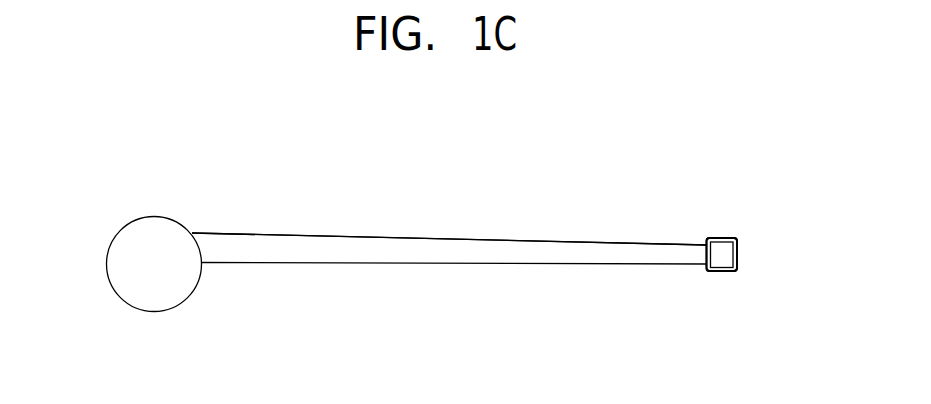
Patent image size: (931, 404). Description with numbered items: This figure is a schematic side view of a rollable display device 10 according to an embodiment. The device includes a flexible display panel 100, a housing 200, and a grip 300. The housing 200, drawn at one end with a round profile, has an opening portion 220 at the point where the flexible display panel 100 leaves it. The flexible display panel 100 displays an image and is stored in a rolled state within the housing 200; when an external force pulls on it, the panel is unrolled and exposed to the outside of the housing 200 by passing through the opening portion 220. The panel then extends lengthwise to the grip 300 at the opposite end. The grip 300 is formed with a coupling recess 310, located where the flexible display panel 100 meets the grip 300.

The light source apparatus 10 is at (608, 176).
The light guide 100 is at (462, 245).
The lamp housing 200 is at (157, 230).
The housing exit opening 220 is at (193, 229).
The head part 300 is at (724, 238).
The connection part 310 is at (705, 242).